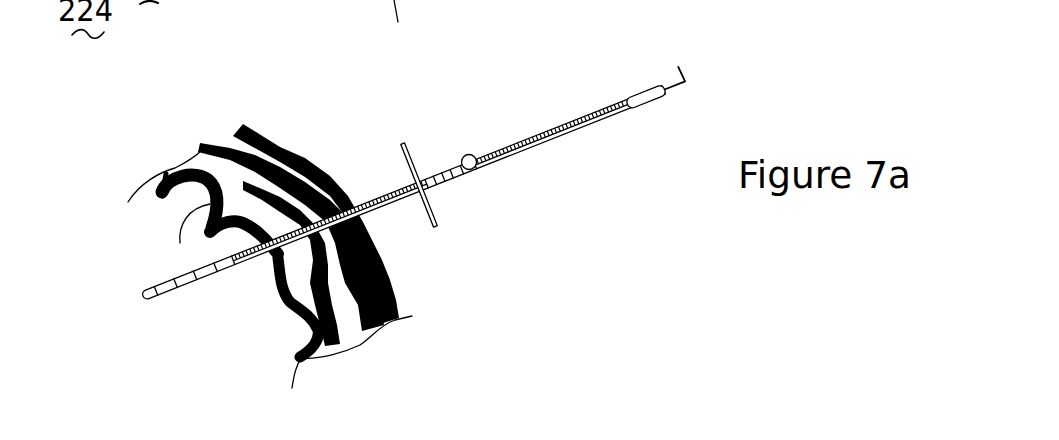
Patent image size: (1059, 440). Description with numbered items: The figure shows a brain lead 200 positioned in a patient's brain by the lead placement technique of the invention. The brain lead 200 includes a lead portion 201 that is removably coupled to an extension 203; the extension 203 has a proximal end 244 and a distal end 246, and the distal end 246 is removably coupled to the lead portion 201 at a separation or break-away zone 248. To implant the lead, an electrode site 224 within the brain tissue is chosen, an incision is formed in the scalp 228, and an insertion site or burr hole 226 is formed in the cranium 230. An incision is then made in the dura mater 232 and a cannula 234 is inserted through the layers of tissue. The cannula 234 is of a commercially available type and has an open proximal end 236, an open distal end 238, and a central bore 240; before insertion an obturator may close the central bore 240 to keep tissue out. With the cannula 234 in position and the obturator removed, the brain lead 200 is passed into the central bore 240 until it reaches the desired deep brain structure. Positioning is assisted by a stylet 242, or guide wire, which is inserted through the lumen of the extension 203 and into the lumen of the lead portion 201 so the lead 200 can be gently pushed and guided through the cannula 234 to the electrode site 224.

The brain lead 200 is at (593, 108).
The lead portion 201 is at (448, 183).
The extension 203 is at (560, 138).
The electrode site 224 is at (108, 320).
The burr hole 226 is at (343, 200).
The scalp 228 is at (369, 232).
The cranium 230 is at (263, 126).
The dura mater 232 is at (194, 200).
The cannula 234 is at (409, 157).
The open proximal end 236 is at (418, 178).
The open distal end 238 is at (220, 273).
The central bore 240 is at (265, 258).
The stylet 242 is at (687, 78).
The proximal end 244 is at (663, 92).
The distal end 246 is at (477, 167).
The break-away zone 248 is at (463, 152).